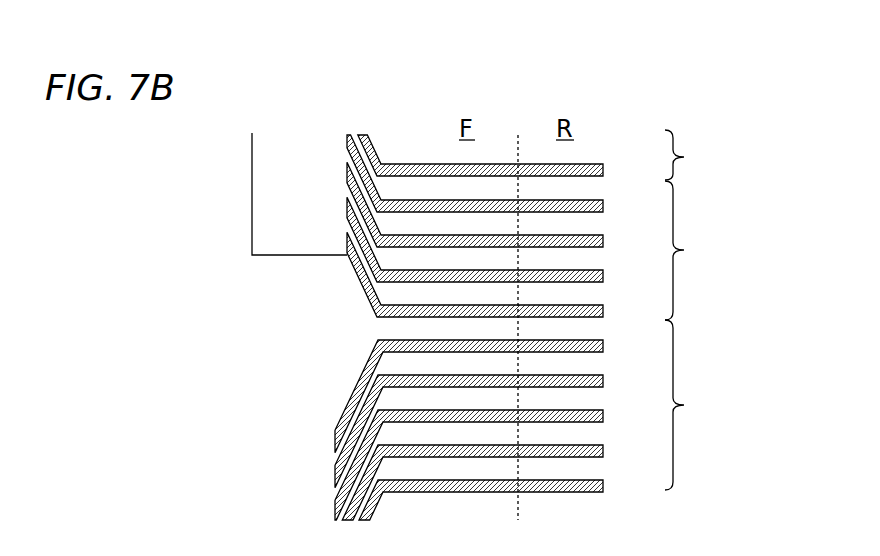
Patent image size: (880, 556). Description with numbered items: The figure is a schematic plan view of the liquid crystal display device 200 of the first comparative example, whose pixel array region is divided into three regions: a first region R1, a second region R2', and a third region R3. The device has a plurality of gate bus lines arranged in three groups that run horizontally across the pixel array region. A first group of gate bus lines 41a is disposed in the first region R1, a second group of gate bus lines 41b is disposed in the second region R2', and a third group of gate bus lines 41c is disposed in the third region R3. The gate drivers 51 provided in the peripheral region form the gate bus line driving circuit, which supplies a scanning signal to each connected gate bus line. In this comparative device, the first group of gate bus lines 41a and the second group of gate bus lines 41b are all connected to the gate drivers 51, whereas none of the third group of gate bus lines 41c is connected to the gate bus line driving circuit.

The liquid crystal display device 200 is at (750, 86).
The gate driver 51 is at (252, 212).
The first group of gate bus lines 41a is at (603, 170).
The second group of gate bus lines 41b is at (603, 206).
The third group of gate bus lines 41c is at (603, 346).
The first region R1 is at (690, 155).
The second region R2' is at (693, 250).
The third region R3 is at (690, 405).